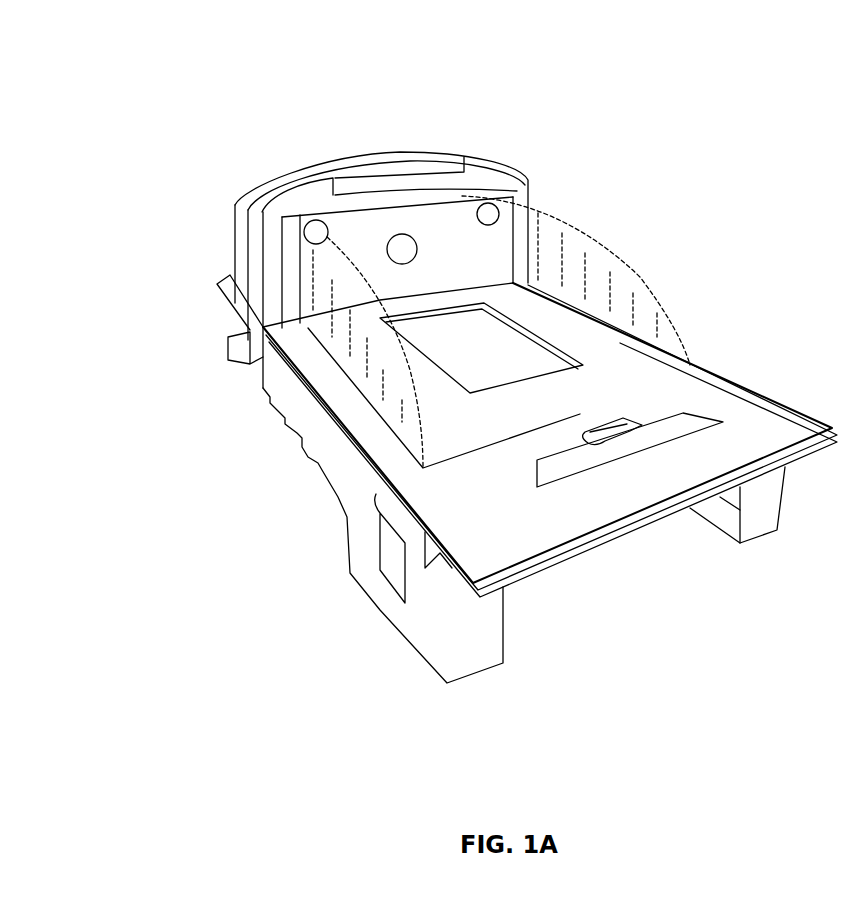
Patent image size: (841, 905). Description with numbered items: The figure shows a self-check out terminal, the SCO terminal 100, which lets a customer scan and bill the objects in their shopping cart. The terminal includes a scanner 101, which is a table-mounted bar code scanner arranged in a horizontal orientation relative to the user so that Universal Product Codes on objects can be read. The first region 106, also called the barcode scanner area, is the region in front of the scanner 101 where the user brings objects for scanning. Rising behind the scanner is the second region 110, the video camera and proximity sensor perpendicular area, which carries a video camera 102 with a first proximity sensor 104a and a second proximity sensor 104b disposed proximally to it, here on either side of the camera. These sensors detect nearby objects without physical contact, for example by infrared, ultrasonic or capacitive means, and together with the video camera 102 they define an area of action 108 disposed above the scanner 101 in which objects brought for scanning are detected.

The SCO terminal 100 is at (181, 475).
The scanner 101 is at (493, 331).
The video camera 102 is at (403, 240).
The first proximity sensor 104a is at (313, 222).
The second proximity sensor 104b is at (488, 212).
The first region 106 is at (532, 524).
The area of action 108 is at (309, 333).
The second region 110 is at (335, 183).